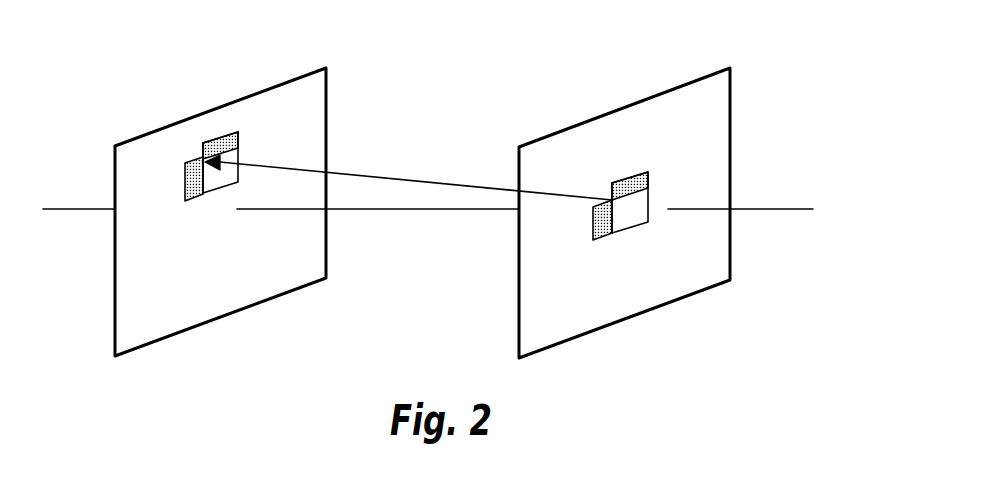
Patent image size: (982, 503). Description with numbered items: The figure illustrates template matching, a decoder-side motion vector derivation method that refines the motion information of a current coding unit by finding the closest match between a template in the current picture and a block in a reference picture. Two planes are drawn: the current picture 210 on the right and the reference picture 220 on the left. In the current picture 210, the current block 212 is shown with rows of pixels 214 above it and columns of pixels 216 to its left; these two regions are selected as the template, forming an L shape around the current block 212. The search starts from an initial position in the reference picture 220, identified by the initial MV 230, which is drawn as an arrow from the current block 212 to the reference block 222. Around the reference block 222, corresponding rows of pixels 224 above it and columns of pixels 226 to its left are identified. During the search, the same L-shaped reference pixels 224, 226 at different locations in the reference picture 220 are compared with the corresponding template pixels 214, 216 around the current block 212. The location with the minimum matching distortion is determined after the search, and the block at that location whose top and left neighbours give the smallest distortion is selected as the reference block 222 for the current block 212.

The current picture 210 is at (731, 153).
The current block 212 is at (633, 227).
The rows of pixels above current block 214 is at (627, 179).
The columns of pixels to the left of the current block 216 is at (593, 224).
The reference picture 220 is at (326, 139).
The reference block 222 is at (225, 188).
The rows of pixels above the reference block 224 is at (216, 140).
The columns of pixels to the left of the reference block 226 is at (187, 180).
The initial MV 230 is at (392, 178).